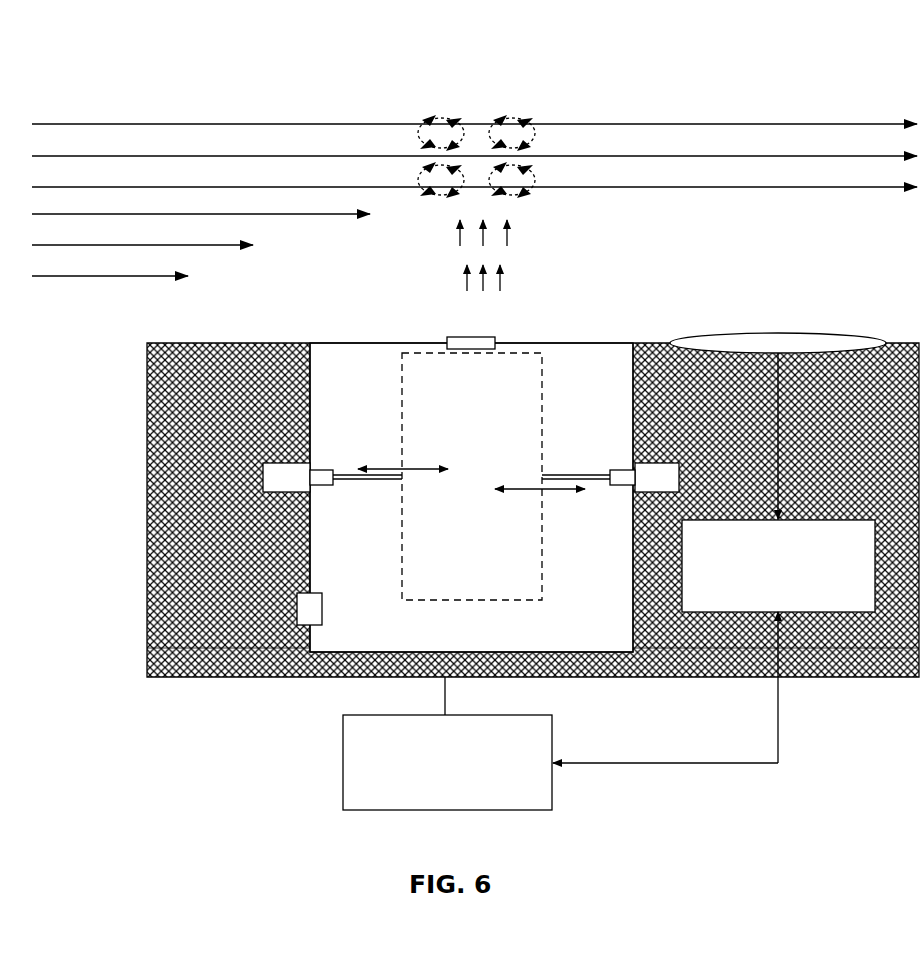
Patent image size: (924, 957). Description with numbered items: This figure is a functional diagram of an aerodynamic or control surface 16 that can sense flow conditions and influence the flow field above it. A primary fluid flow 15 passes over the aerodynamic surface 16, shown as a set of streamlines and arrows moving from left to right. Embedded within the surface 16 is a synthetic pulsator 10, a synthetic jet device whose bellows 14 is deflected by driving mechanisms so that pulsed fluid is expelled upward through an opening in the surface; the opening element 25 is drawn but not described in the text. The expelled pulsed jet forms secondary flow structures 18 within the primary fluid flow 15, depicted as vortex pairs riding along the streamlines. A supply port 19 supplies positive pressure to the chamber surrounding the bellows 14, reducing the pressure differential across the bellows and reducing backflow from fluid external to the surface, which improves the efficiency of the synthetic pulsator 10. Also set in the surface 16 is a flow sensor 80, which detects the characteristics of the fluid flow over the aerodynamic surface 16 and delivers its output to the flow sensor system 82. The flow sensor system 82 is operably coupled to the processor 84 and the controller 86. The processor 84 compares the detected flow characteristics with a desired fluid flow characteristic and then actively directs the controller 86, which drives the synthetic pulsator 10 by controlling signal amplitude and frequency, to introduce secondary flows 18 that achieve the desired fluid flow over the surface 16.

The synthetic pulsator 10 is at (580, 314).
The bellows 14 is at (402, 553).
The primary fluid flow 15 is at (350, 123).
The aerodynamic surface 16 is at (531, 483).
The secondary flow structures 18 is at (503, 127).
The supply port 19 is at (322, 598).
The orifice 25 is at (496, 345).
The flow sensor 80 is at (778, 411).
The flow sensor system 82 is at (714, 641).
The processor 84 is at (447, 743).
The controller 86 is at (447, 762).